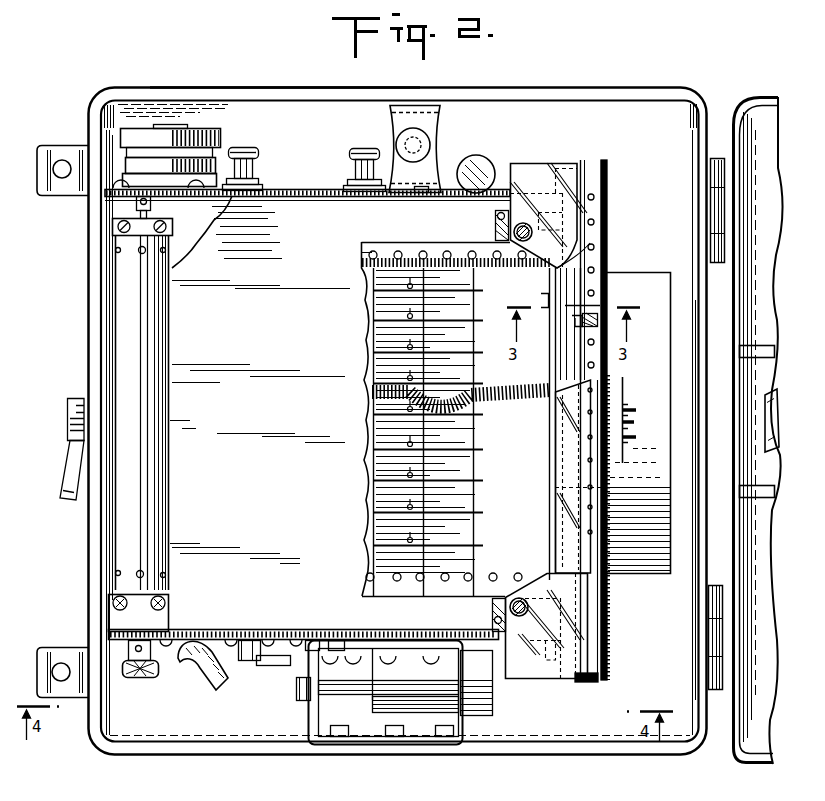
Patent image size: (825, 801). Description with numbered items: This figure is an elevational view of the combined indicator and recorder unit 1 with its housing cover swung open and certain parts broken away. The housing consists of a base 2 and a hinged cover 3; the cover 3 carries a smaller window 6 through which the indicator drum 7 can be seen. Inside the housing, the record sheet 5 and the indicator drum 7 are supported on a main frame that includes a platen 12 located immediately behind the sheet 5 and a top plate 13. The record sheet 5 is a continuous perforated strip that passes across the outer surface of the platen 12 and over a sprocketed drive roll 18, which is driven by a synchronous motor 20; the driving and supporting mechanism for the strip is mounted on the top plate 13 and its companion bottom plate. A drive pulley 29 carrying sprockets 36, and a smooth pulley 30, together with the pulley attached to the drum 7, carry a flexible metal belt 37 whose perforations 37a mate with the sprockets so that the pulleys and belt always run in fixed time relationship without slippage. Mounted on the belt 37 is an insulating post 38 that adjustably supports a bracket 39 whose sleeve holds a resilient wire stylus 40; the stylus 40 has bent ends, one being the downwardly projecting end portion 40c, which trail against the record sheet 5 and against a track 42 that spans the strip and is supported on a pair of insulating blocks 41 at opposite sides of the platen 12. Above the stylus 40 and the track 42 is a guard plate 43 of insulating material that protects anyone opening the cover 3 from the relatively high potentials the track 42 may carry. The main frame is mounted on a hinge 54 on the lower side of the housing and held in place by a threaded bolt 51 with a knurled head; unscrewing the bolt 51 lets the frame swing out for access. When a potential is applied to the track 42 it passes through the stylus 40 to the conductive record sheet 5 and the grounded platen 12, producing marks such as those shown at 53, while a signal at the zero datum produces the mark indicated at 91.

The combined indicator and recorder unit 1 is at (168, 760).
The base 2 is at (182, 95).
The hinged cover 3 is at (762, 98).
The record sheet 5 is at (386, 253).
The smaller window 6 is at (773, 430).
The indicator drum 7 is at (658, 275).
The platen 12 is at (305, 213).
The top plate 13 is at (224, 216).
The sprocketed drive roll 18 is at (130, 307).
The synchronous motor 20 is at (200, 133).
The drive pulley 29 is at (601, 621).
The pulley 30 is at (607, 175).
The sprockets 36 is at (586, 682).
The belt 37 is at (597, 258).
The perforations 37a is at (594, 222).
The post 38 is at (597, 315).
The bracket 39 is at (578, 318).
The stylus 40 is at (570, 299).
The downwardly projecting end portion 40c is at (540, 298).
The insulating blocks 41 is at (495, 228).
The track 42 is at (548, 357).
The guard plate 43 is at (542, 673).
The threaded bolt 51 is at (431, 148).
The marks 53 is at (375, 395).
The hinge 54 is at (312, 694).
The zero datum mark 91 is at (362, 258).